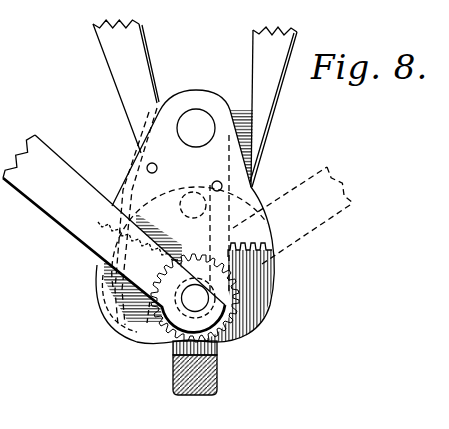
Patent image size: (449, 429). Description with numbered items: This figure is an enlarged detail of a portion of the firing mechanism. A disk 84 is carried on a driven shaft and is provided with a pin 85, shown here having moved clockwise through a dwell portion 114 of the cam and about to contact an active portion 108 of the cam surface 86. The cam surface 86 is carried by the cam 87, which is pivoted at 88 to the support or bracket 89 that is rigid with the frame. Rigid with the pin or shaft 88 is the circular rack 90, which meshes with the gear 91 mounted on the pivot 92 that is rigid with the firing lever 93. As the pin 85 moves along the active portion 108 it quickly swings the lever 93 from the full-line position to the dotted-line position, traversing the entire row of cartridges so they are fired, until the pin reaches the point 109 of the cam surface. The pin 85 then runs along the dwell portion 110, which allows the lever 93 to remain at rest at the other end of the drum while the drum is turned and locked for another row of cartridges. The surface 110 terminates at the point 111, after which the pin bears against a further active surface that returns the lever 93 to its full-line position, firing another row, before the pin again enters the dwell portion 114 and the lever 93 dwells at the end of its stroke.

The disk 84 is at (267, 300).
The pin 85 is at (196, 204).
The cam surface 86 is at (133, 215).
The cam 87 is at (103, 283).
The pivot pin or shaft 88 is at (196, 127).
The support or bracket 89 is at (128, 60).
The circular rack 90 is at (267, 133).
The gear 91 is at (252, 318).
The pivot 92 is at (227, 335).
The firing lever 93 is at (67, 208).
The active portion of cam surface 108 is at (262, 221).
The point of cam surface 109 is at (297, 252).
The dwell portion of cam surface 110 is at (147, 323).
The terminal point of dwell portion 111 is at (106, 326).
The dwell portion of cam 114 is at (160, 230).